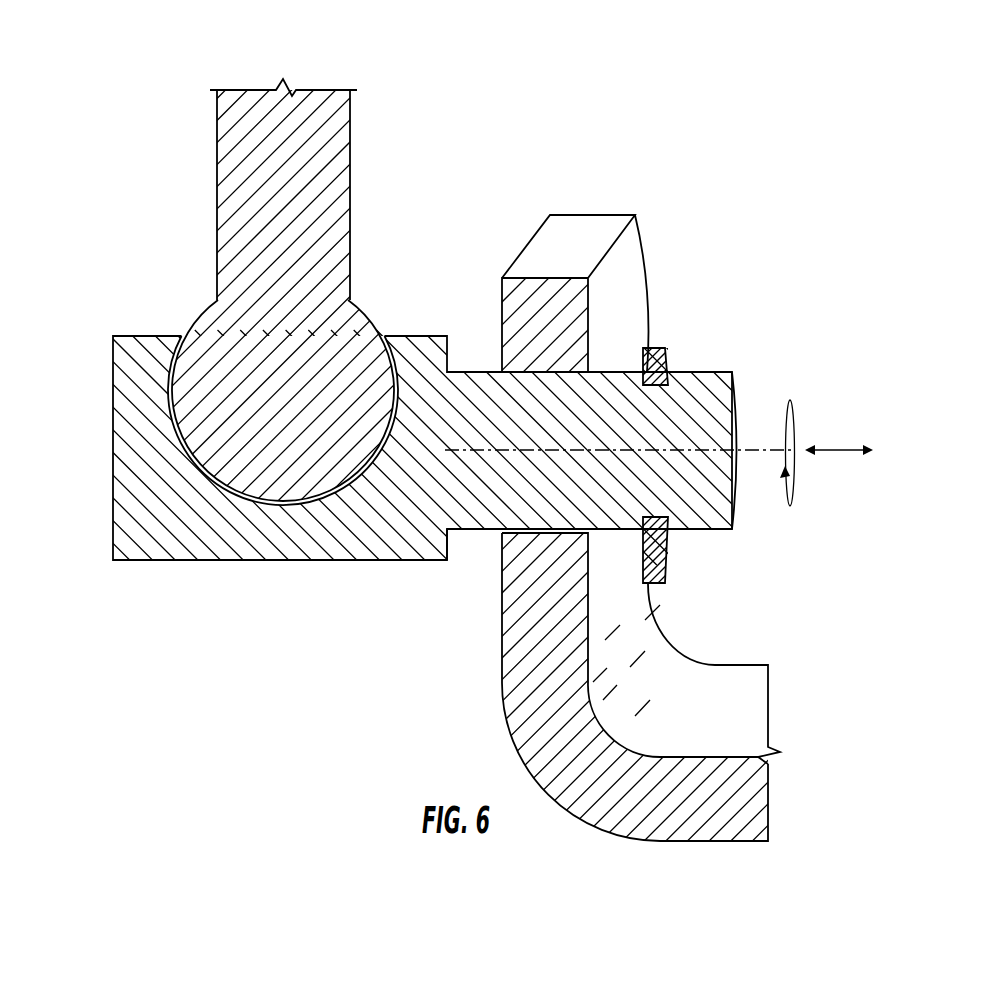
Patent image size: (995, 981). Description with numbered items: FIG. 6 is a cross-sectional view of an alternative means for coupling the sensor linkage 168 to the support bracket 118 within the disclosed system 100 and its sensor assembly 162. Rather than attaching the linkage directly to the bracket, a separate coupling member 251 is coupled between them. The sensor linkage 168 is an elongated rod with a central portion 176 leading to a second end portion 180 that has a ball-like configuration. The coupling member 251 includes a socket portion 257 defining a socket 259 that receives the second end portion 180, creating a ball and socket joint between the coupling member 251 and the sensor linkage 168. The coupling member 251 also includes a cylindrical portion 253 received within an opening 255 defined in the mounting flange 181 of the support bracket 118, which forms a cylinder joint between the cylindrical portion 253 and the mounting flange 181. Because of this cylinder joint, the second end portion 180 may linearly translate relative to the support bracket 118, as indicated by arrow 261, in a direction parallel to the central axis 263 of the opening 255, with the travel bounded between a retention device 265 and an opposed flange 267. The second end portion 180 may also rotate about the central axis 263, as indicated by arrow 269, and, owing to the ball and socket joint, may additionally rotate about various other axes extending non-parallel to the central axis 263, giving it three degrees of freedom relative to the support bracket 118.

The fluid system 100 is at (128, 116).
The valve assembly 162 is at (122, 208).
The sensor linkage 168 is at (402, 277).
The central portion 176 is at (250, 100).
The second end portion 180 is at (337, 338).
The mounting flange 181 is at (643, 615).
The support bracket 118 is at (601, 687).
The coupling member 251 is at (476, 484).
The cylindrical portion 253 is at (720, 383).
The opening 255 is at (572, 355).
The socket portion 257 is at (273, 528).
The socket 259 is at (177, 430).
The arrow 261 is at (840, 450).
The central axis 263 is at (752, 448).
The retention device 265 is at (657, 348).
The opposed flange 267 is at (456, 548).
The arrow 269 is at (792, 476).